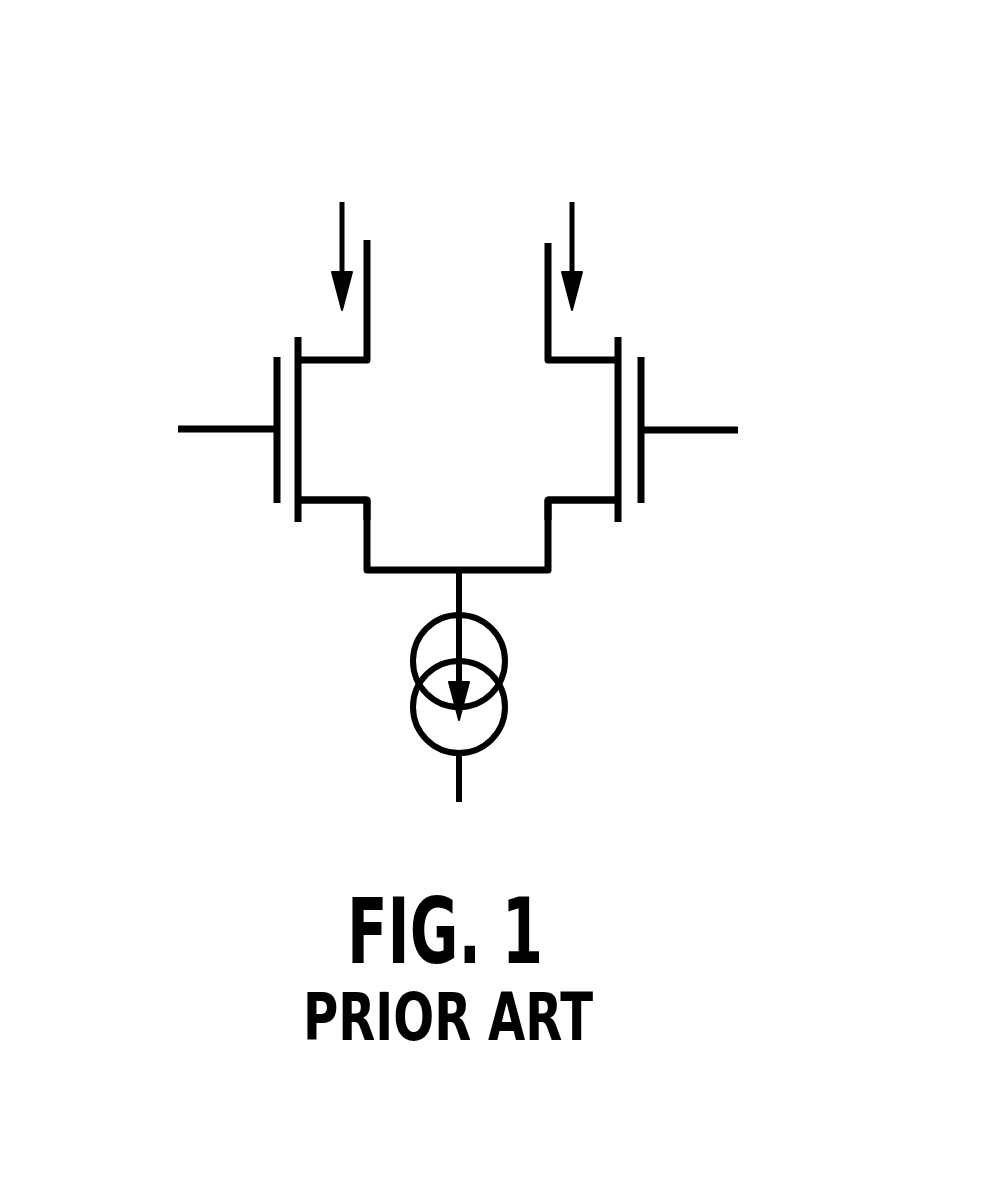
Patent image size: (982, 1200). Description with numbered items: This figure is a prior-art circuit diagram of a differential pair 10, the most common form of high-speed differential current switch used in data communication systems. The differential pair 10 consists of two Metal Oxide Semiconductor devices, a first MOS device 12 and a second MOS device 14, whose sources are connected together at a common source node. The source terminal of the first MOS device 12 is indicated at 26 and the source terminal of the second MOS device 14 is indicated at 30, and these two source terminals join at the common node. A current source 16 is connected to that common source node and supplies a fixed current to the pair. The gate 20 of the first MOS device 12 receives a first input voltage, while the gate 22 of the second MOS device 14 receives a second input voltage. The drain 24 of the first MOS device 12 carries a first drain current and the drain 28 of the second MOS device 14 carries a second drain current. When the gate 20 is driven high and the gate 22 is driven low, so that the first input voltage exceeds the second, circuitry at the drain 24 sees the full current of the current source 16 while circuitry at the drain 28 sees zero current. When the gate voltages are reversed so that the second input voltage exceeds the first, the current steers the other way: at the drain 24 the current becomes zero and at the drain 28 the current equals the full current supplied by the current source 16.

The differential pair 10 is at (762, 130).
The MOS device 12 is at (418, 375).
The MOS device 14 is at (492, 482).
The current source 16 is at (660, 690).
The gate 20 is at (230, 425).
The gate 22 is at (685, 428).
The drain 24 is at (332, 353).
The source of first transistor 26 is at (337, 508).
The drain 28 is at (583, 353).
The source of second transistor 30 is at (580, 505).